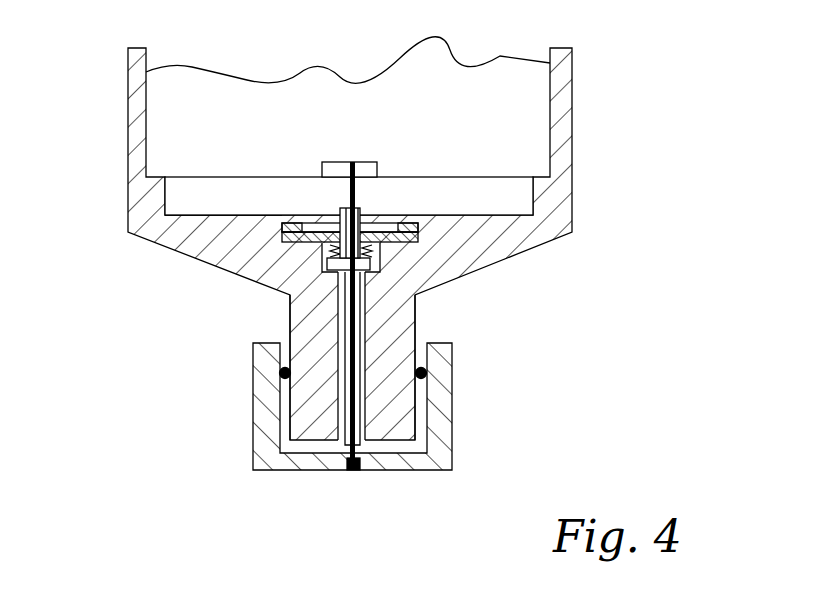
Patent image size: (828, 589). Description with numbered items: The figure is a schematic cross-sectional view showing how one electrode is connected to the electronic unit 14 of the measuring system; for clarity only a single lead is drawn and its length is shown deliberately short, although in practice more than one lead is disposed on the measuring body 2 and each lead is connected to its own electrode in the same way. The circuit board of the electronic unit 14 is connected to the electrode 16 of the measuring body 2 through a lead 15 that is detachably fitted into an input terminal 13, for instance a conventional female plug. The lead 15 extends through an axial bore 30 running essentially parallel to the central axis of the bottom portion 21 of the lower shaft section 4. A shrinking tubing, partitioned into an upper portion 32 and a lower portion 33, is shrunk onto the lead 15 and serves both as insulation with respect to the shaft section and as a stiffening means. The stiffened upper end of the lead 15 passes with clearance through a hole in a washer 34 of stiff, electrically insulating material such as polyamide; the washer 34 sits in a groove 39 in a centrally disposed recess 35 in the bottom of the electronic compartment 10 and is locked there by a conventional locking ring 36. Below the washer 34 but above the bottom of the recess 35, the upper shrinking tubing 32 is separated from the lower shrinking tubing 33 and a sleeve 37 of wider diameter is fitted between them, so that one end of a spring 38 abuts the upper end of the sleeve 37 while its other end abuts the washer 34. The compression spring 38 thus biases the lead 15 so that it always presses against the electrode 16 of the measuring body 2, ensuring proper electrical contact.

The measuring body 2 is at (262, 440).
The lower shaft section 4 is at (128, 96).
The electronic compartment 10 is at (490, 190).
The input terminal 13 is at (324, 162).
The electronic unit 14 is at (425, 66).
The lead 15 is at (348, 162).
The electrode 16 is at (357, 470).
The bottom portion 21 is at (290, 318).
The axial bore 30 is at (378, 300).
The upper portion of shrinking tubing 32 is at (340, 211).
The lower portion of shrinking tubing 33 is at (360, 320).
The washer 34 is at (384, 226).
The recess 35 is at (385, 262).
The locking ring 36 is at (414, 230).
The sleeve 37 is at (328, 262).
The spring 38 is at (306, 243).
The groove 39 is at (266, 230).